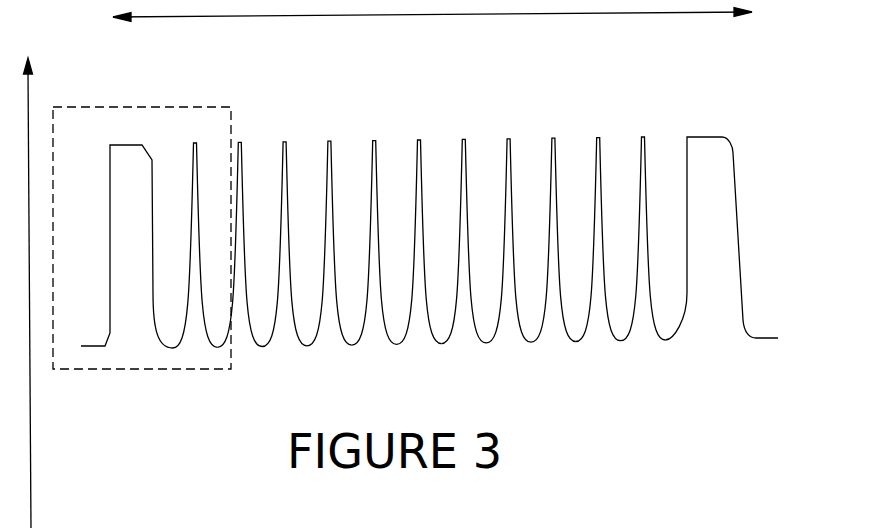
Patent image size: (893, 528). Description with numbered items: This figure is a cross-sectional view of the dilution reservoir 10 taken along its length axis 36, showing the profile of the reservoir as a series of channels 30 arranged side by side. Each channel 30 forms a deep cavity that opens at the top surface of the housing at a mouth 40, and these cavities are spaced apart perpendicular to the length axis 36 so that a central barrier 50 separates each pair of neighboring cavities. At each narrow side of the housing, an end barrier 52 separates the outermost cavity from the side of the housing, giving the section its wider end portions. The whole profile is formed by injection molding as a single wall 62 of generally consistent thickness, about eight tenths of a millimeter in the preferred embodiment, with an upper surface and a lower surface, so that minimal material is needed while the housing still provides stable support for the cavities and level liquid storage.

The dilution reservoir 10 is at (410, 97).
The channels 30 is at (646, 113).
The length axis 36 is at (235, 18).
The mouth 40 is at (361, 158).
The central barrier 50 is at (512, 158).
The end barrier 52 is at (715, 135).
The single wall 62 is at (738, 230).